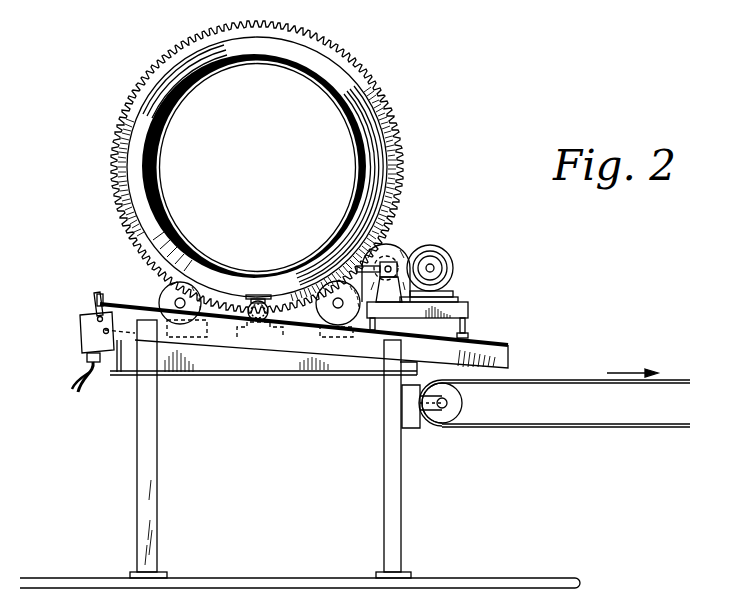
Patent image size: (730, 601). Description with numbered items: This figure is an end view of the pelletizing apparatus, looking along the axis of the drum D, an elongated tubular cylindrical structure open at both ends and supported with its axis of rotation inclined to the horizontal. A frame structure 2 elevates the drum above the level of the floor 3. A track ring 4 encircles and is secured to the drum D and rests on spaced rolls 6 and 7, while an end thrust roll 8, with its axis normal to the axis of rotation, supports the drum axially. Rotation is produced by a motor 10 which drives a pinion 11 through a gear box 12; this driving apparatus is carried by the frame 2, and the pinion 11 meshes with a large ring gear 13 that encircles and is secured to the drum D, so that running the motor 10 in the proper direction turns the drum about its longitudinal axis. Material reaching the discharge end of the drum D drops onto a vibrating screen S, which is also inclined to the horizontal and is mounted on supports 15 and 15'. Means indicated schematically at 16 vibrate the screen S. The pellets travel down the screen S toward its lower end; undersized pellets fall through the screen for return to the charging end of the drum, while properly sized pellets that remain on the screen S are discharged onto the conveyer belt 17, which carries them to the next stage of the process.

The frame structure 2 is at (262, 358).
The floor 3 is at (487, 582).
The track ring 4 is at (343, 78).
The roll 6 is at (166, 294).
The roll 7 is at (337, 290).
The end thrust roll 8 is at (248, 292).
The motor 10 is at (438, 266).
The pinion 11 is at (386, 243).
The gear box 12 is at (410, 238).
The ring gear 13 is at (397, 127).
The support 15 is at (416, 459).
The support 15' is at (180, 449).
The vibrating means 16 is at (88, 343).
The conveyer belt 17 is at (683, 380).
The drum D is at (318, 74).
The vibrating screen S is at (348, 352).